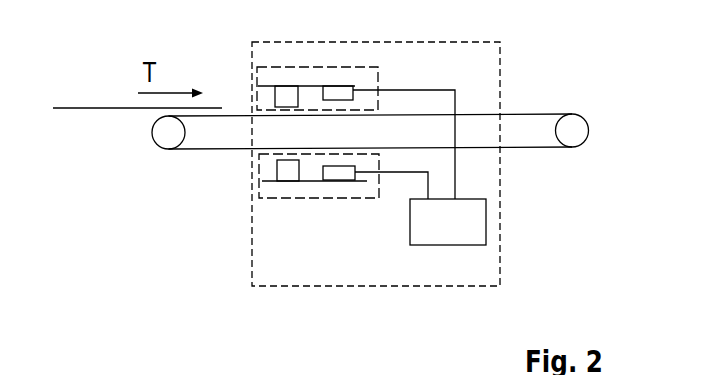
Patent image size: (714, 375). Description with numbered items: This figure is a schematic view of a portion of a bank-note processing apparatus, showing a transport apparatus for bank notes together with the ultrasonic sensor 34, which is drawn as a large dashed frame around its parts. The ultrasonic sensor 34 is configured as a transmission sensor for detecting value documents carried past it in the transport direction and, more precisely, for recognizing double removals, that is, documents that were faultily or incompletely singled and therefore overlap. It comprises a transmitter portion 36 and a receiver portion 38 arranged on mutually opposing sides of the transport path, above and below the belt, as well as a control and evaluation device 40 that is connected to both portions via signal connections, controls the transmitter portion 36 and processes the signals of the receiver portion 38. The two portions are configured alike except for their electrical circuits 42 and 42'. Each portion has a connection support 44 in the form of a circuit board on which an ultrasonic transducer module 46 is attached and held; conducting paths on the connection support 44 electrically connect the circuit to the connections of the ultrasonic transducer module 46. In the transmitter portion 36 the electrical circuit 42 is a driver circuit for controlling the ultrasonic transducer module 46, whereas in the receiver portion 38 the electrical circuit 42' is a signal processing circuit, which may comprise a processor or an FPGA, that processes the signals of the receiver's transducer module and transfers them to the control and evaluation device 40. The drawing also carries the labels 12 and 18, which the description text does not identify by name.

The material web 12 is at (125, 109).
The conveyor belt 18 is at (155, 165).
The ultrasonic sensor 34 is at (500, 192).
The transmitter portion 36 is at (258, 80).
The receiver portion 38 is at (289, 209).
The control and evaluation device 40 is at (448, 222).
The electrical circuit 42 is at (389, 101).
The electrical circuit 42' is at (375, 217).
The connection support 44 is at (312, 139).
The ultrasonic transducer module 46 is at (276, 144).